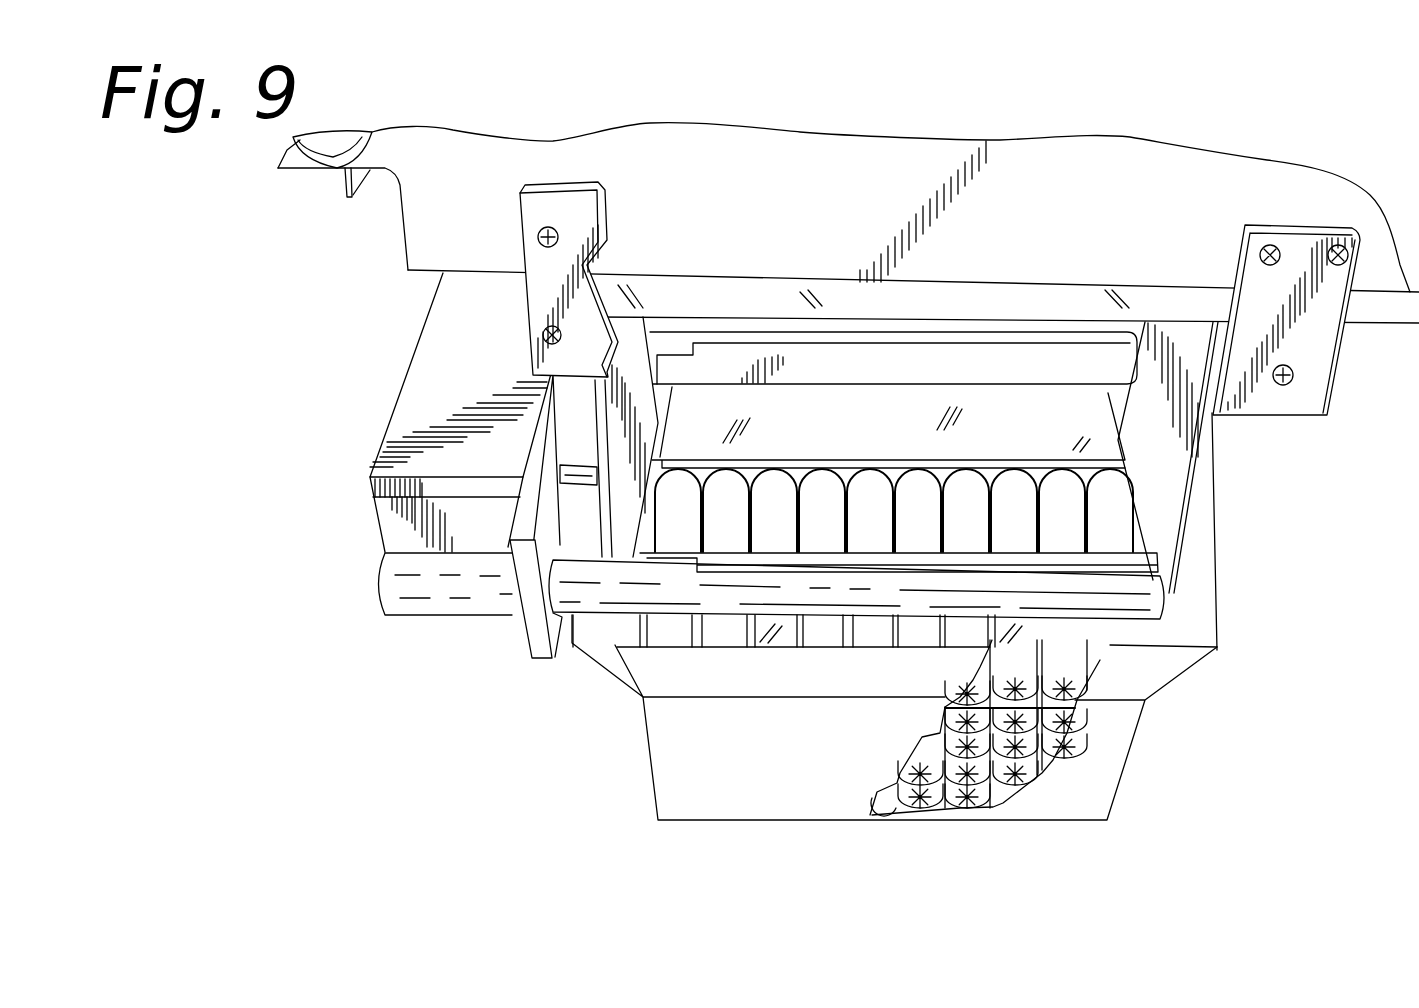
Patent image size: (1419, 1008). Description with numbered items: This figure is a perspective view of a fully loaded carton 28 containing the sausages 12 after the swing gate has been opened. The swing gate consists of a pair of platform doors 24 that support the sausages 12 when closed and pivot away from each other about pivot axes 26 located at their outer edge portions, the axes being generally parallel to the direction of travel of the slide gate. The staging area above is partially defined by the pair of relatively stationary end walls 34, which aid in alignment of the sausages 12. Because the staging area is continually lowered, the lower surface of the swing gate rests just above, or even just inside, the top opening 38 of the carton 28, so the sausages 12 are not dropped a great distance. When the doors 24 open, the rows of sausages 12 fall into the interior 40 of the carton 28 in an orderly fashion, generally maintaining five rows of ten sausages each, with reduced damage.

The sausages 12 is at (1035, 752).
The platform doors 24 is at (1103, 433).
The pivot axes 26 is at (1097, 334).
The carton 28 is at (1093, 805).
The end walls 34 is at (630, 342).
The top opening 38 is at (622, 687).
The interior 40 is at (898, 812).